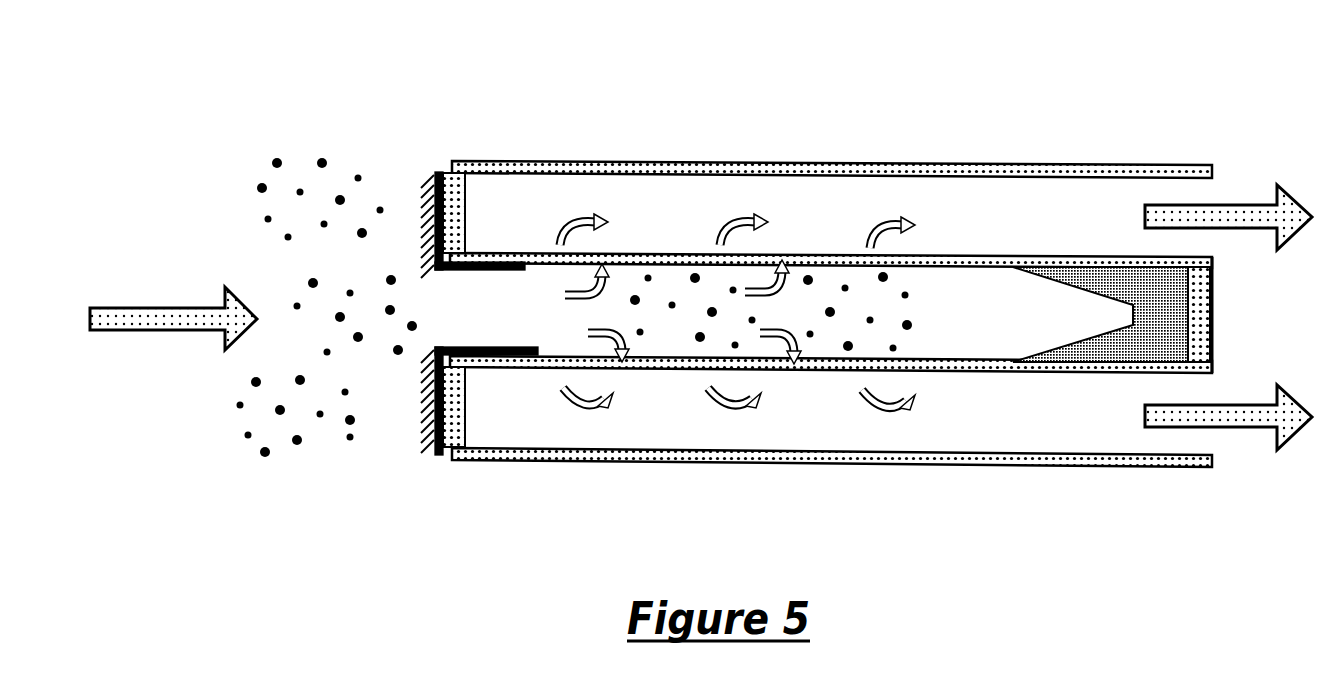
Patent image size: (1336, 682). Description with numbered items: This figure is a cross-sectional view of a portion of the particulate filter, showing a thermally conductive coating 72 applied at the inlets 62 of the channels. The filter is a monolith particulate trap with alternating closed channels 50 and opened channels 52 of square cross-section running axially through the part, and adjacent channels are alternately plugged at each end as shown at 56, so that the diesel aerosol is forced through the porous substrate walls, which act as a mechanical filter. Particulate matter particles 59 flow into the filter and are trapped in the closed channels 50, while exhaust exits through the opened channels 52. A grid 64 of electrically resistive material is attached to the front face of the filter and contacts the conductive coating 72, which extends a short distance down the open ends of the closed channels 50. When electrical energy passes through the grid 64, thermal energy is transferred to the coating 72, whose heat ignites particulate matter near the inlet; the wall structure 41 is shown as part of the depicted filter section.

The outer tube 41 is at (686, 254).
The closed channels 50 is at (1027, 298).
The opened channels 52 is at (990, 208).
The plugs 56 is at (455, 163).
The particulate matter particles 59 is at (1170, 302).
The inlets 62 is at (405, 296).
The grid 64 is at (432, 436).
The thermally conductive coating 72 is at (436, 171).